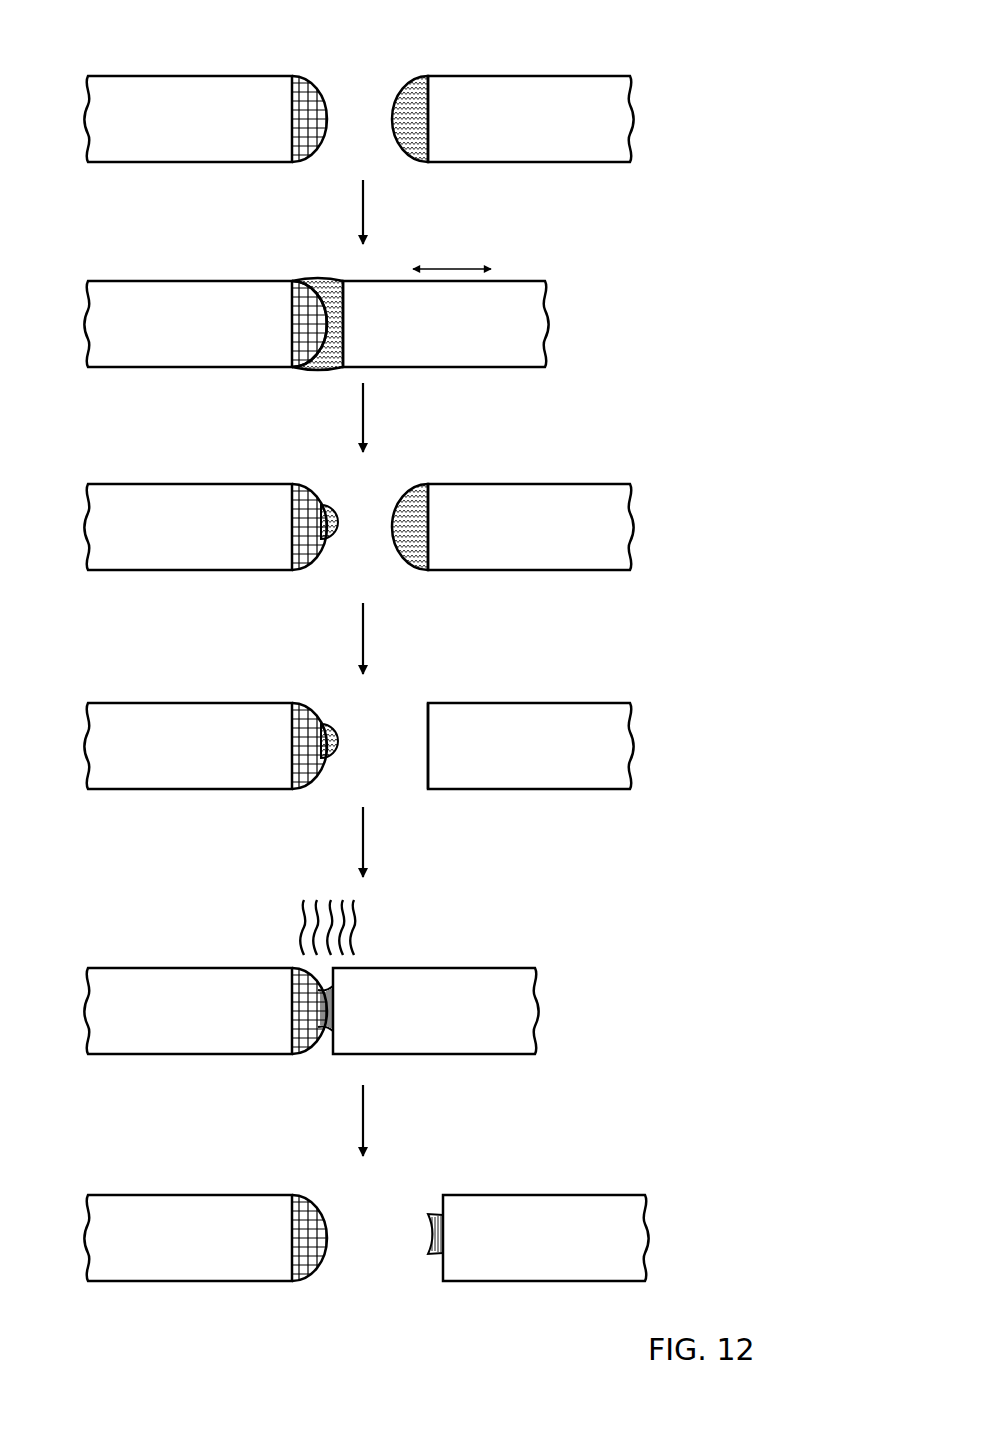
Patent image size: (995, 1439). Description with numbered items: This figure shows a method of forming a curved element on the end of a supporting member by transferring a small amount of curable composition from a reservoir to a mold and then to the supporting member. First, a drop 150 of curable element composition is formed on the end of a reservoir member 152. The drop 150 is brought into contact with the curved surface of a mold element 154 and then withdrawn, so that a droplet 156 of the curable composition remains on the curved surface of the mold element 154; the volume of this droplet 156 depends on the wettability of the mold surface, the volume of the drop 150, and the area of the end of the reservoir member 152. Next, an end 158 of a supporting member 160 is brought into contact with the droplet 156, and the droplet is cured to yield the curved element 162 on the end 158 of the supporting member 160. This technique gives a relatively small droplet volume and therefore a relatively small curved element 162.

The drop 150 is at (407, 76).
The reservoir member 152 is at (587, 165).
The mold element 154 is at (306, 72).
The droplet 156 is at (340, 498).
The end 158 is at (432, 763).
The supporting member 160 is at (556, 699).
The curved element 162 is at (430, 1260).